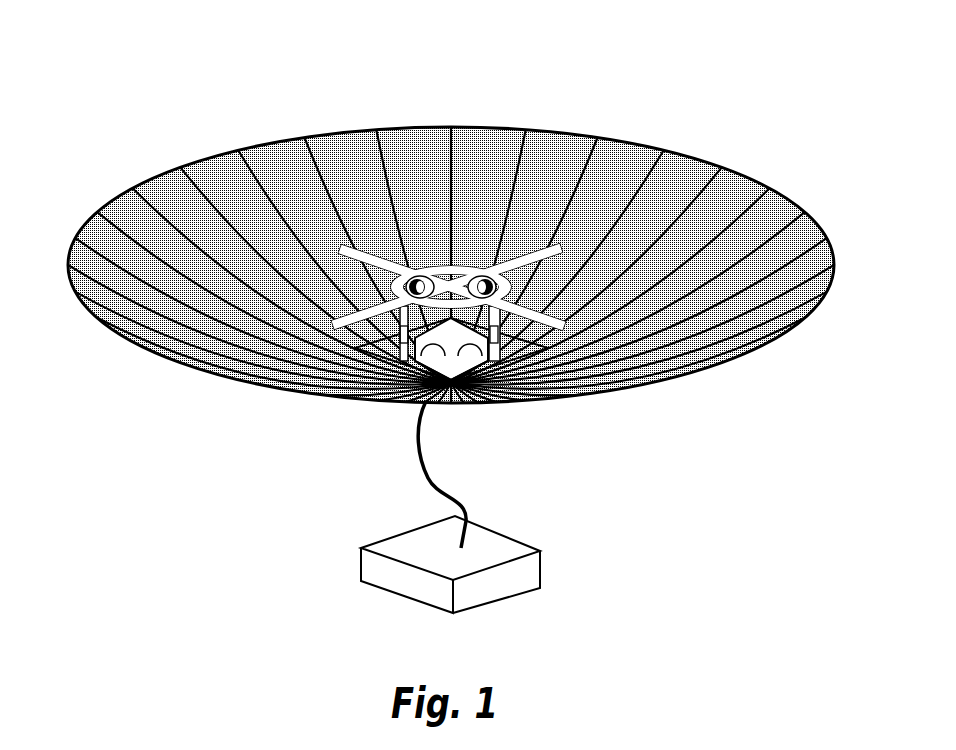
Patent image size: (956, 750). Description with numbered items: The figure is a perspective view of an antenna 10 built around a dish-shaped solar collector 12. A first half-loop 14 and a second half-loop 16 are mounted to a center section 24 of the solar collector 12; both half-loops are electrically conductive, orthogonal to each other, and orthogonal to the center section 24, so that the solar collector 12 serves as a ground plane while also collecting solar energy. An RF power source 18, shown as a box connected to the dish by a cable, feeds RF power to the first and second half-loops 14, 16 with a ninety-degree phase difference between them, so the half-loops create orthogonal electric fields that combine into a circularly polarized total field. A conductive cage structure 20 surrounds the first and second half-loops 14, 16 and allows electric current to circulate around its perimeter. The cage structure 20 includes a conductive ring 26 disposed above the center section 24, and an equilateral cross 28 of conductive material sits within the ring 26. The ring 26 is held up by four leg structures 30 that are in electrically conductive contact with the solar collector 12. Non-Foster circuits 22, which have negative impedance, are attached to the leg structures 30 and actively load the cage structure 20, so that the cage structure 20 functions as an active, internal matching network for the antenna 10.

The antenna 10 is at (172, 55).
The solar collector 12 is at (140, 178).
The first half-loop 14 is at (450, 345).
The second half-loop 16 is at (483, 335).
The RF power source 18 is at (537, 565).
The conductive cage structure 20 is at (522, 280).
The non-Foster circuits 22 is at (530, 342).
The center section 24 is at (432, 382).
The conductive ring 26 is at (450, 260).
The equilateral cross 28 is at (447, 262).
The leg structures 30 is at (380, 338).